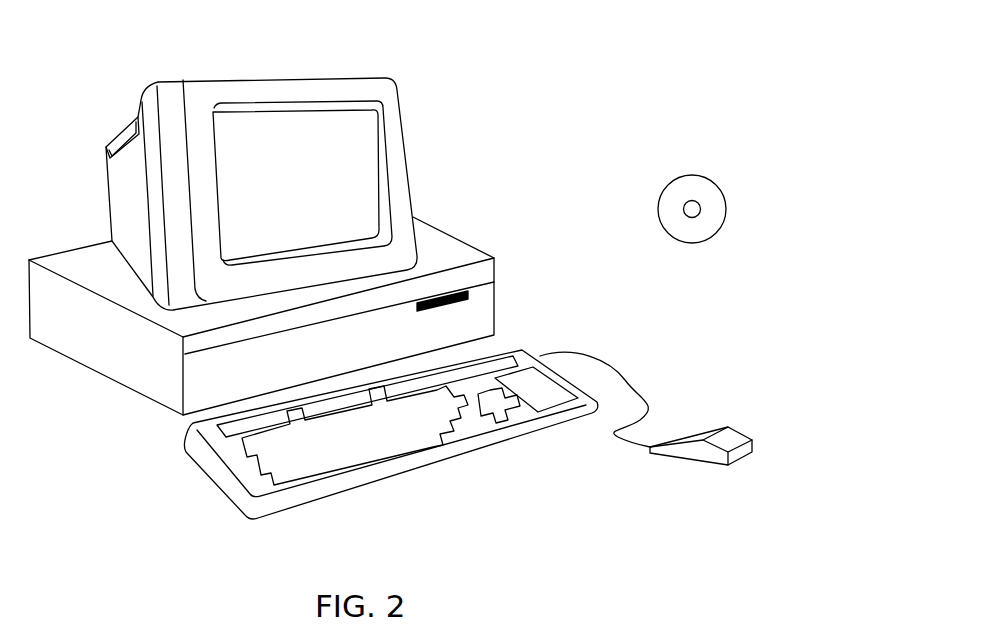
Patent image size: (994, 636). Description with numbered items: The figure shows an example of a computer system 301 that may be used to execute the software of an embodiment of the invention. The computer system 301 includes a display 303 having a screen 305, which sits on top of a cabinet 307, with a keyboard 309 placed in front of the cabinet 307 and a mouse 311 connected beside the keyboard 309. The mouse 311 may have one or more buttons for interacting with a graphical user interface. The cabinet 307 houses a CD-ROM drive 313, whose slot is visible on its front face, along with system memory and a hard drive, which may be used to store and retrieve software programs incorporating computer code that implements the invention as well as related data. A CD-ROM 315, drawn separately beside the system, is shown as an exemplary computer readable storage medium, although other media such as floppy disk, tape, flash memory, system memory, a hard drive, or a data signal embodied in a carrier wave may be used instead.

The computer system 301 is at (607, 57).
The display 303 is at (412, 192).
The screen 305 is at (368, 140).
The cabinet 307 is at (148, 398).
The keyboard 309 is at (405, 474).
The mouse 311 is at (741, 431).
The CD-ROM drive 313 is at (468, 291).
The CD-ROM 315 is at (708, 176).